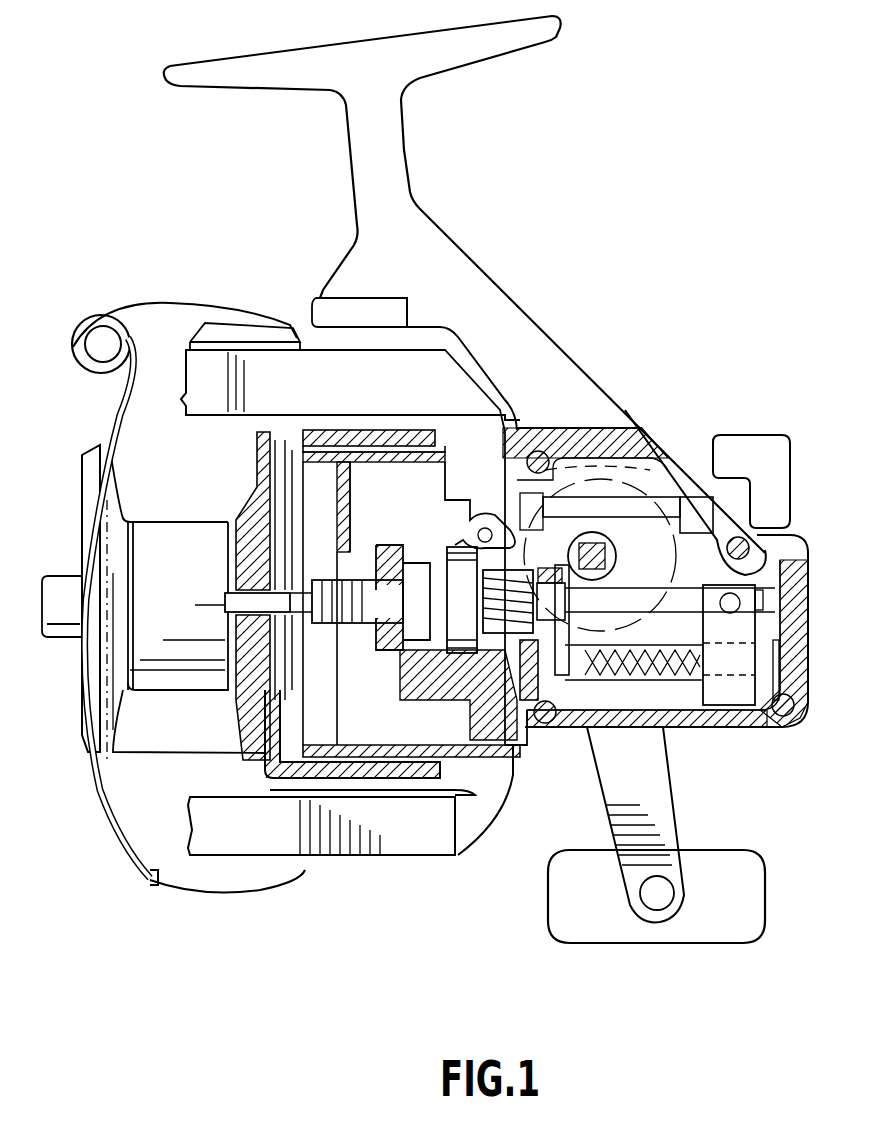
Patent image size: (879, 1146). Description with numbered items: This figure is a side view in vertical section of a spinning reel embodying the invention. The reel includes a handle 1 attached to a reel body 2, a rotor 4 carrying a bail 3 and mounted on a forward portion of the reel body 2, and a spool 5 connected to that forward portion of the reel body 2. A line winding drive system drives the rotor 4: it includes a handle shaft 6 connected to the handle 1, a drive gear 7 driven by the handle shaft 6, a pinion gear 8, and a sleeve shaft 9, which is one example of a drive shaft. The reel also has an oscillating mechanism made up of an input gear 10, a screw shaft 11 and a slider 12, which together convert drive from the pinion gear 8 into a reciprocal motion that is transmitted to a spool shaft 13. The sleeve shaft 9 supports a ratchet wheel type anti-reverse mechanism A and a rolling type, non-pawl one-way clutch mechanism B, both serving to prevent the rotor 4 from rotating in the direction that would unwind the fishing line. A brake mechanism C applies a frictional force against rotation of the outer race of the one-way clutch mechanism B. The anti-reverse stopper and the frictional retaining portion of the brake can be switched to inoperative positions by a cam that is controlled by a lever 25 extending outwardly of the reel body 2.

The handle 1 is at (676, 840).
The reel body 2 is at (575, 385).
The bail 3 is at (125, 853).
The rotor 4 is at (438, 845).
The spool 5 is at (187, 675).
The handle shaft 6 is at (588, 547).
The drive gear 7 is at (652, 452).
The pinion gear 8 is at (580, 660).
The sleeve shaft 9 is at (365, 592).
The input gear 10 is at (527, 735).
The screw shaft 11 is at (590, 665).
The slider 12 is at (737, 697).
The spool shaft 13 is at (683, 597).
The lever 25 is at (757, 450).
The anti-reverse mechanism A is at (427, 515).
The one-way clutch mechanism B is at (466, 650).
The brake mechanism C is at (467, 532).